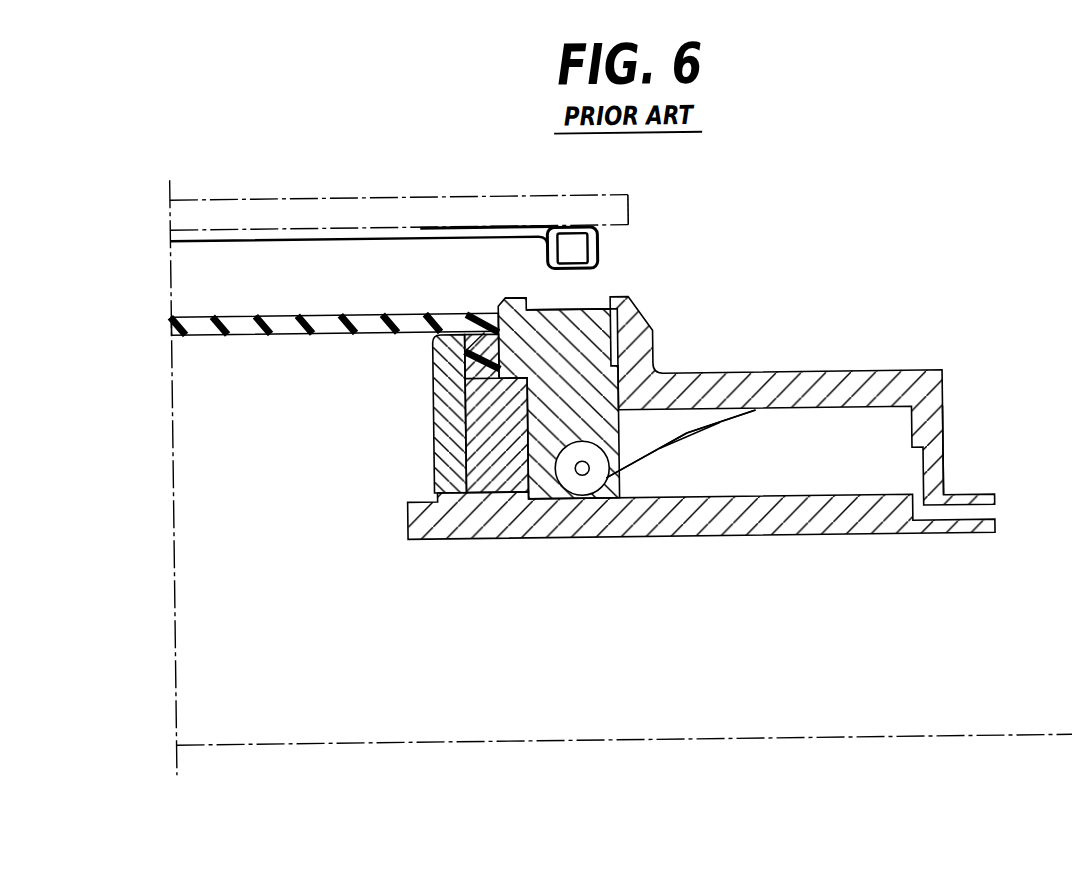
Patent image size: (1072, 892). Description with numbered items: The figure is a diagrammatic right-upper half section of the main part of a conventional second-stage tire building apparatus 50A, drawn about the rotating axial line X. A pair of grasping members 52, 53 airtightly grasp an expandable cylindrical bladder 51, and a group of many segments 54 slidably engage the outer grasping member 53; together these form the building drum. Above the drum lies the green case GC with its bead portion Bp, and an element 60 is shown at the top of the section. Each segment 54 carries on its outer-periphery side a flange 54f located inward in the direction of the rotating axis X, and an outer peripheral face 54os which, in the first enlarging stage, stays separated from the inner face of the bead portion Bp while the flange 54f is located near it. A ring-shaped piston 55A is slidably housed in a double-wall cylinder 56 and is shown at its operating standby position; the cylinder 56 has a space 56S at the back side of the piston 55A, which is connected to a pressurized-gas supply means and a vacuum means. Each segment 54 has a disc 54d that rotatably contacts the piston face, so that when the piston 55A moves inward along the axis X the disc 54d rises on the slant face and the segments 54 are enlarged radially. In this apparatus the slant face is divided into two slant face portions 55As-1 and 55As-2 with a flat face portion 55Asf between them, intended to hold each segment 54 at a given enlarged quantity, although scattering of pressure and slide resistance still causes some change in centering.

The upper cover plate 60 is at (369, 192).
The expandable cylindrical bladder 51 is at (322, 311).
The green case GC is at (319, 239).
The bead portion Bp is at (549, 259).
The flange 54f is at (529, 300).
The outer peripheral face 54os is at (575, 309).
The tire building apparatus 50A is at (690, 413).
The double-wall cylinder 56 is at (726, 450).
The space 56S is at (945, 436).
The slant face portion 55As-2 is at (728, 424).
The flat face portion 55Asf is at (700, 430).
The grasping member 52 is at (441, 393).
The outer grasping member 53 is at (486, 425).
The segment 54 is at (537, 420).
The disc 54d is at (585, 484).
The slant face portion 55As-1 is at (638, 447).
The ring-shaped piston 55A is at (756, 507).
The rotating axial line X is at (883, 736).